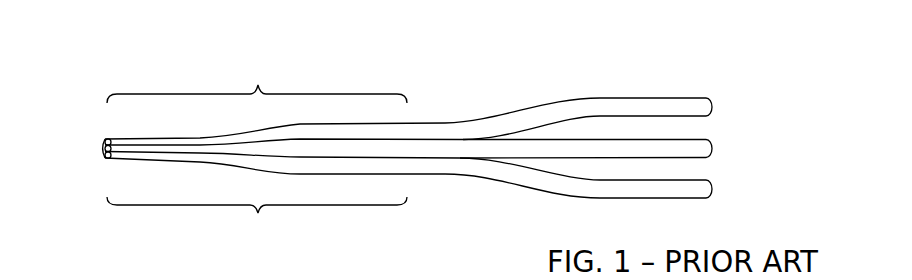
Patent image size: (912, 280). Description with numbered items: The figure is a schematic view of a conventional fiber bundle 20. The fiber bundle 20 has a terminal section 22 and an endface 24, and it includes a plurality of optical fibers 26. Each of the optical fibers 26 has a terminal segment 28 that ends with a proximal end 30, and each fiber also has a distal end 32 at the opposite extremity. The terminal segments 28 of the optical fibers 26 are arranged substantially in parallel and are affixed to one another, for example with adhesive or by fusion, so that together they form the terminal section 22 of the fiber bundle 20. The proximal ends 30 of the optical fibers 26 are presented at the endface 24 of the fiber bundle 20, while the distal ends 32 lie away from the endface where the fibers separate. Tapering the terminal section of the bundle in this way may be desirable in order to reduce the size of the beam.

The fiber bundle 20 is at (705, 45).
The terminal section 22 is at (257, 82).
The endface 24 is at (68, 151).
The optical fibers 26 is at (520, 148).
The terminal segment 28 is at (257, 224).
The proximal end 30 is at (106, 155).
The distal end 32 is at (712, 108).